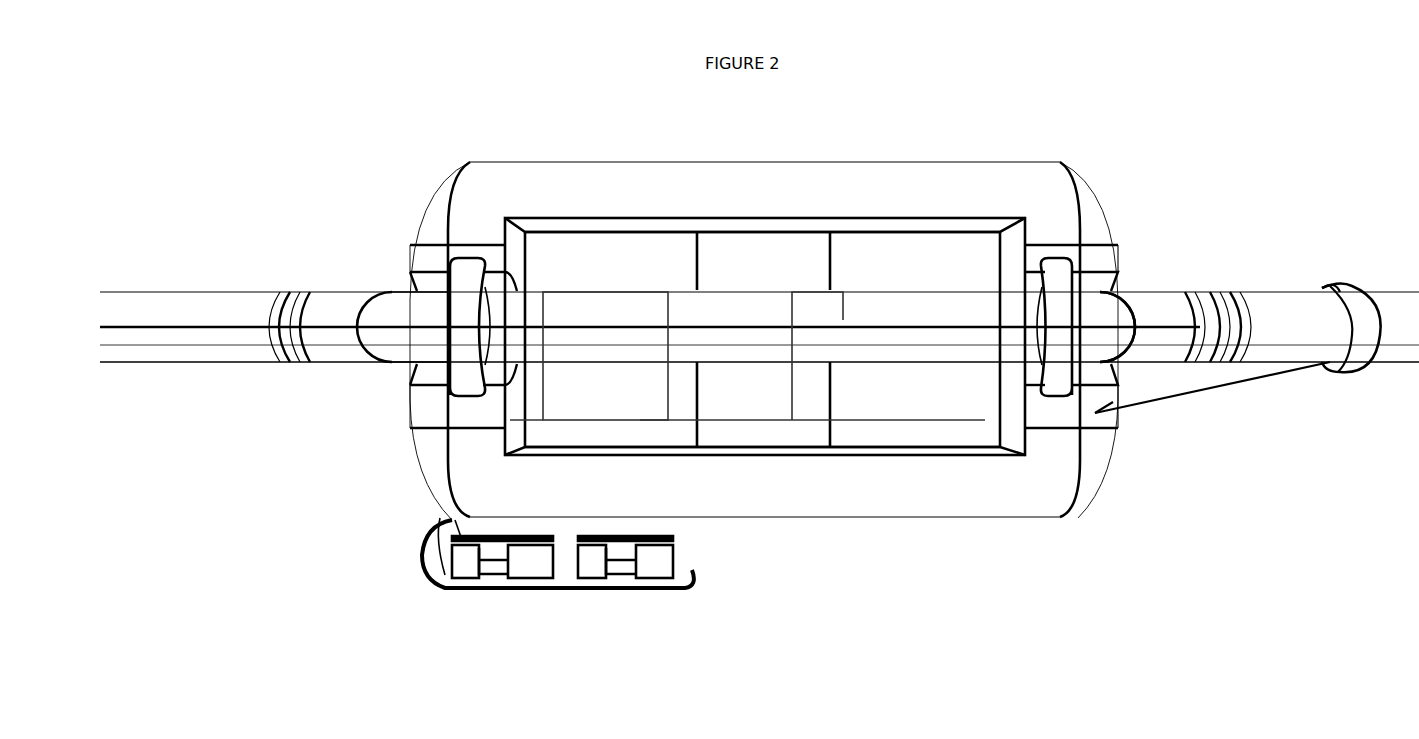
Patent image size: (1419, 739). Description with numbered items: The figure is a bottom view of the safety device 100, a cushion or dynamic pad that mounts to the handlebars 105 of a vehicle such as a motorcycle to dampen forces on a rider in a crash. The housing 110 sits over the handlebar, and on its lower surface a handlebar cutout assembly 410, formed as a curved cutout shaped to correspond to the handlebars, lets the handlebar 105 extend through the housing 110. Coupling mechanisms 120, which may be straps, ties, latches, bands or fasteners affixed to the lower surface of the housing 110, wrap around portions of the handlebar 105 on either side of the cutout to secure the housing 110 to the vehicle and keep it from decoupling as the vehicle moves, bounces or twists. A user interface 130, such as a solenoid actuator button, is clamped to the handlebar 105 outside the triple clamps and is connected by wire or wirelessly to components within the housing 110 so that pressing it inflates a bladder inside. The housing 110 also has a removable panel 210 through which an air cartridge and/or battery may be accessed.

The safety device 100 is at (198, 115).
The handlebars 105 is at (240, 312).
The housing 110 is at (818, 185).
The coupling mechanisms 120 is at (412, 240).
The user interface 130 is at (1365, 318).
The removable panel 210 is at (472, 562).
The handlebar cutout assembly 410 is at (560, 272).